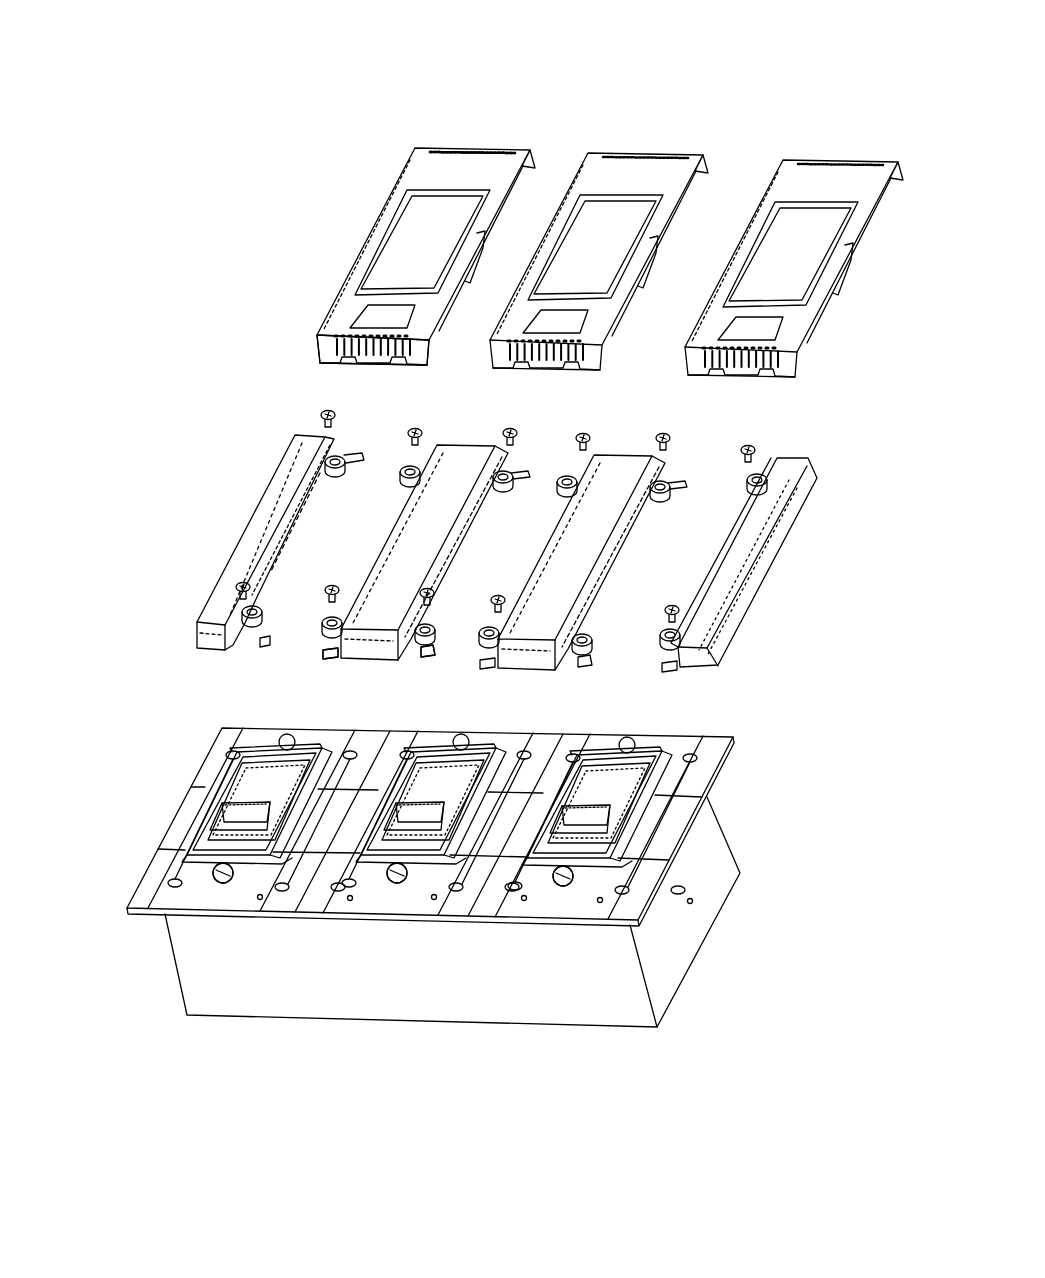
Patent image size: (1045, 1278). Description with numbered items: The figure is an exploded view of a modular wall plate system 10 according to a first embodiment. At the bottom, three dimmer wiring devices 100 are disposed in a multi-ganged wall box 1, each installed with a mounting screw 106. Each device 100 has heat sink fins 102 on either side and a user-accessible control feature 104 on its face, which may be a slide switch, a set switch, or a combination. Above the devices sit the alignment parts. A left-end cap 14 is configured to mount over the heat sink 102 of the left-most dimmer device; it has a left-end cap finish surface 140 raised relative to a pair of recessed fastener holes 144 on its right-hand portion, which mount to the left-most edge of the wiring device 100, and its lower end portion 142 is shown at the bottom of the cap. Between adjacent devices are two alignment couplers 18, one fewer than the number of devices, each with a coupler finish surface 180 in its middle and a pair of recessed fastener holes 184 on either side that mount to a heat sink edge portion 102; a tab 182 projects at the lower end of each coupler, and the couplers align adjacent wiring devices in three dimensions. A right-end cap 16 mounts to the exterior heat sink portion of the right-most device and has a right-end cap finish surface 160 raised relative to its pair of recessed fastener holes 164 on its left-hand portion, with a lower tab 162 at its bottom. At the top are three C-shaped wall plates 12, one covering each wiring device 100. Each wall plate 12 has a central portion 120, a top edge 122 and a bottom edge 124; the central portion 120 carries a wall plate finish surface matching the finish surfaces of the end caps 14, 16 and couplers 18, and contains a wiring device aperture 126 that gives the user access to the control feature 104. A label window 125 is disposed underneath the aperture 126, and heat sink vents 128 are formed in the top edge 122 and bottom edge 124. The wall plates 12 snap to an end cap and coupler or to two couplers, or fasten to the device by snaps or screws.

The modular wall plate system 10 is at (247, 56).
The wall plate 12 is at (413, 168).
The central portion 120 is at (417, 175).
The top edge 122 is at (530, 152).
The bottom edge 124 is at (427, 355).
The label window 125 is at (372, 320).
The wiring device aperture 126 is at (440, 252).
The heat sink vents 128 is at (470, 147).
The left-end cap 14 is at (253, 523).
The left-end cap finish surface 140 is at (240, 558).
The end module front portion 142 is at (240, 657).
The recessed fastener holes 144 is at (333, 448).
The alignment coupler 18 is at (377, 655).
The coupler finish surface 180 is at (432, 544).
The intermediate module tab 182 is at (332, 655).
The recessed fastener holes 184 is at (427, 460).
The right-end cap 16 is at (765, 558).
The right-end cap finish surface 160 is at (712, 612).
The right end module tab 162 is at (828, 665).
The recessed fastener holes 164 is at (773, 462).
The dimmer wiring device 100 is at (161, 741).
The multi-ganged wall box 1 is at (728, 865).
The heat sink fins 102 is at (845, 763).
The control feature 104 is at (245, 798).
The mounting screw 106 is at (640, 738).